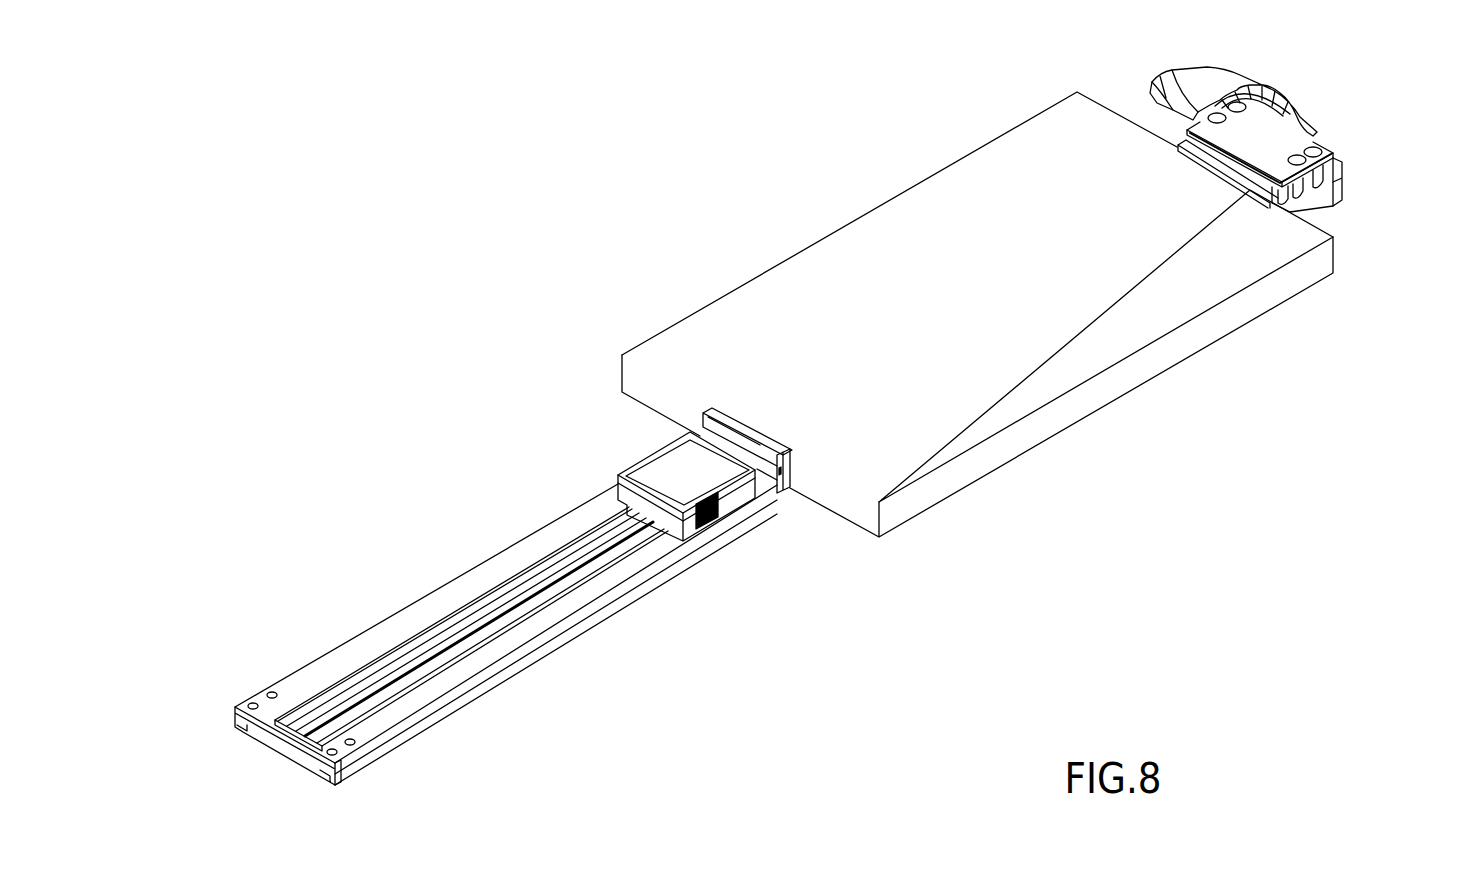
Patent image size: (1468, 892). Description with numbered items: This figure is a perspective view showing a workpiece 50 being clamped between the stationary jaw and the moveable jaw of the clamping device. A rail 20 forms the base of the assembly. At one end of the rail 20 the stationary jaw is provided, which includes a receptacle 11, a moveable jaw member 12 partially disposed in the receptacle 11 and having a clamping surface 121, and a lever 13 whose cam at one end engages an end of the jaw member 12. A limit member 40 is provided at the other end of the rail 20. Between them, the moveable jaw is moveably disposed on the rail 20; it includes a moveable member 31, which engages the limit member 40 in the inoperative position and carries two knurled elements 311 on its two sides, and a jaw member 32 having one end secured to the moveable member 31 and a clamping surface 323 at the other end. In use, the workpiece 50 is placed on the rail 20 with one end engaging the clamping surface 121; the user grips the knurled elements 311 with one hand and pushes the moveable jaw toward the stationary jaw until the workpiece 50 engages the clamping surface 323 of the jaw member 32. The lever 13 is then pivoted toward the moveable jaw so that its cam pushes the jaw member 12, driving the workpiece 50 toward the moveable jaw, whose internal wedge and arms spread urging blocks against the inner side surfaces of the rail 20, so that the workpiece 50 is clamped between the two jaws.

The receptacle 11 is at (1342, 165).
The moveable jaw member 12 is at (1242, 175).
The clamping surface 121 is at (1200, 163).
The lever 13 is at (1163, 66).
The rail 20 is at (382, 653).
The moveable member 31 is at (673, 467).
The knurled elements 311 is at (690, 525).
The jaw member 32 is at (786, 493).
The clamping surface 323 is at (733, 427).
The limit member 40 is at (282, 743).
The workpiece 50 is at (767, 298).